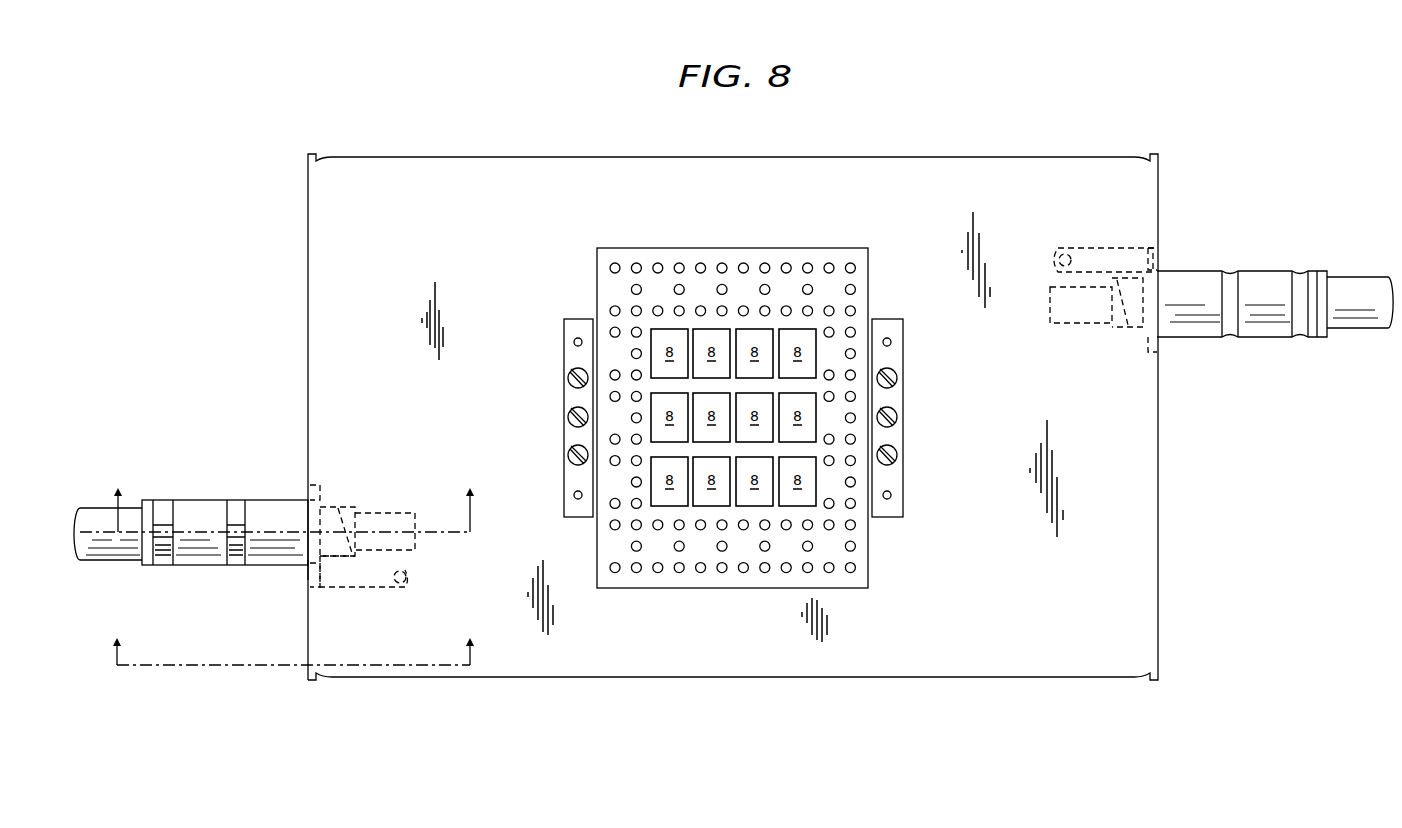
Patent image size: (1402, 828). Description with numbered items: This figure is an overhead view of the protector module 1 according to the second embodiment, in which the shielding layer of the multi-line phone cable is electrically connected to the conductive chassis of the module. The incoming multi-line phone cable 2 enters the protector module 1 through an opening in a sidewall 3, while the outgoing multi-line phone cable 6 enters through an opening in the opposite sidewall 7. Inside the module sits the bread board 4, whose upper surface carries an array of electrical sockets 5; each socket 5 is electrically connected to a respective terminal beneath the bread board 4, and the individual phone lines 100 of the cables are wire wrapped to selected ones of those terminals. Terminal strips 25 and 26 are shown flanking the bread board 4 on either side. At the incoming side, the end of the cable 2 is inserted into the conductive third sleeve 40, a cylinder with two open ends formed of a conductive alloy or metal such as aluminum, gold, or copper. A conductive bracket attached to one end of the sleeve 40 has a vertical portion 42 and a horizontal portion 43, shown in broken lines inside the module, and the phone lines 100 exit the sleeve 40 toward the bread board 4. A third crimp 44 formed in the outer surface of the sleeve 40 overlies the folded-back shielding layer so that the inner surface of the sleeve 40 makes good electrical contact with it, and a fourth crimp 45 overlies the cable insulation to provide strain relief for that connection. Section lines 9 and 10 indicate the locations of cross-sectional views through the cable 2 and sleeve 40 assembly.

The protector module 1 is at (736, 442).
The incoming multi-line phone cable 2 is at (90, 507).
The sidewall 3 is at (308, 630).
The bread board 4 is at (795, 248).
The electrical socket 5 is at (856, 289).
The outgoing multi-line phone cable 6 is at (1348, 277).
The opposite sidewall 7 is at (1158, 487).
The section line 9- 9 is at (293, 640).
The section line 10- 10 is at (280, 499).
The left terminal block 25 is at (570, 357).
The right terminal block 26 is at (895, 471).
The third sleeve 40 is at (225, 530).
The vertical portion 42 is at (326, 490).
The horizontal portion 43 is at (360, 588).
The third crimp 44 is at (233, 566).
The fourth crimp 45 is at (158, 566).
The phone lines 100 is at (375, 510).